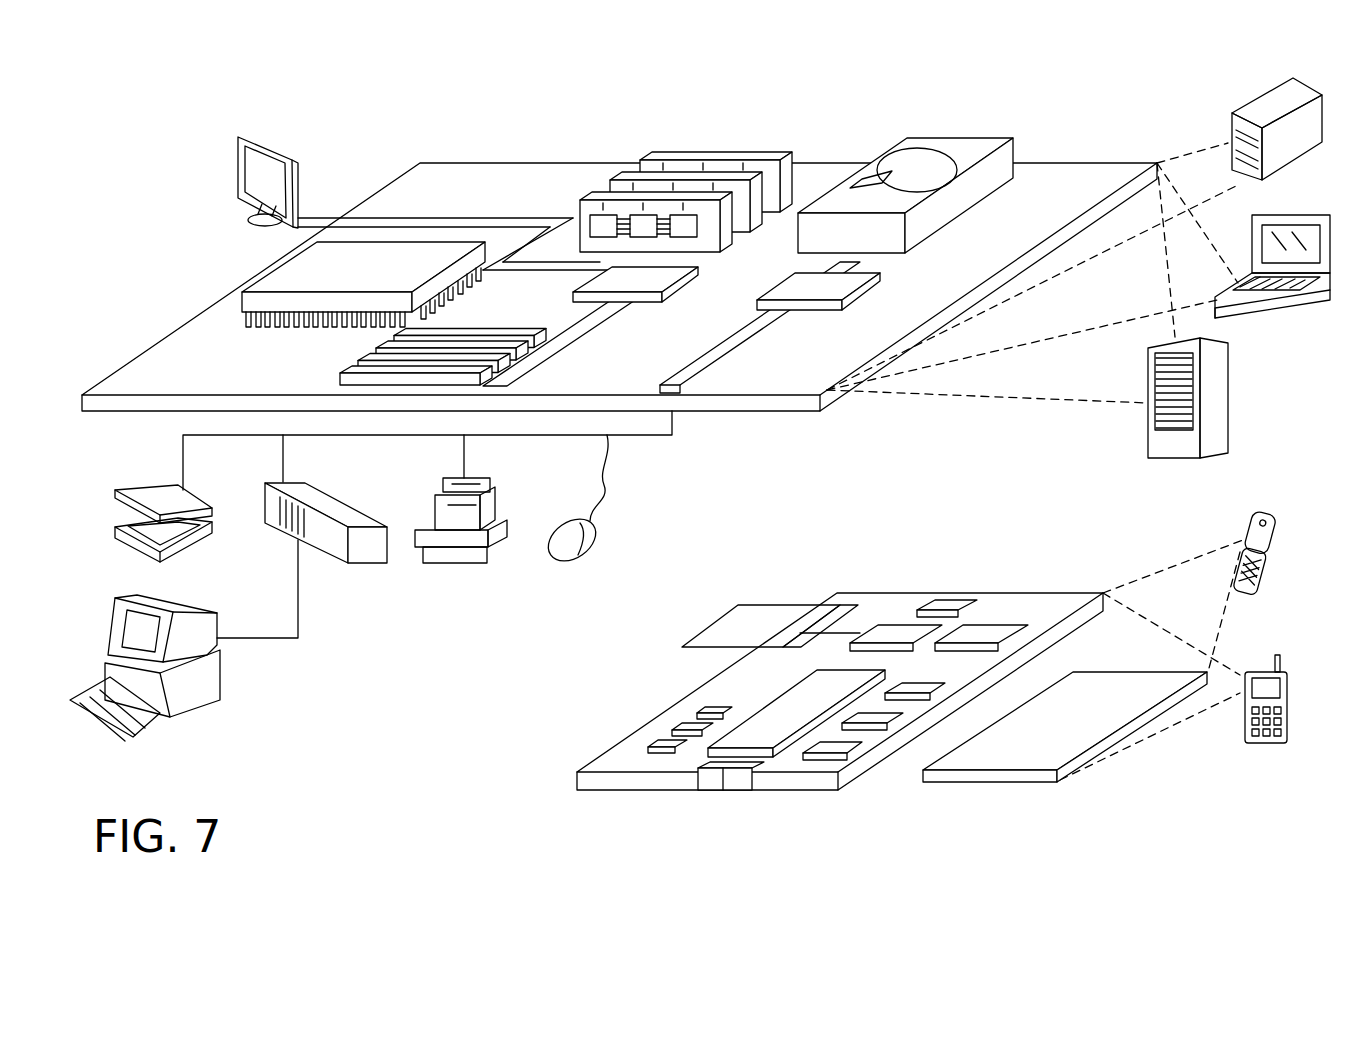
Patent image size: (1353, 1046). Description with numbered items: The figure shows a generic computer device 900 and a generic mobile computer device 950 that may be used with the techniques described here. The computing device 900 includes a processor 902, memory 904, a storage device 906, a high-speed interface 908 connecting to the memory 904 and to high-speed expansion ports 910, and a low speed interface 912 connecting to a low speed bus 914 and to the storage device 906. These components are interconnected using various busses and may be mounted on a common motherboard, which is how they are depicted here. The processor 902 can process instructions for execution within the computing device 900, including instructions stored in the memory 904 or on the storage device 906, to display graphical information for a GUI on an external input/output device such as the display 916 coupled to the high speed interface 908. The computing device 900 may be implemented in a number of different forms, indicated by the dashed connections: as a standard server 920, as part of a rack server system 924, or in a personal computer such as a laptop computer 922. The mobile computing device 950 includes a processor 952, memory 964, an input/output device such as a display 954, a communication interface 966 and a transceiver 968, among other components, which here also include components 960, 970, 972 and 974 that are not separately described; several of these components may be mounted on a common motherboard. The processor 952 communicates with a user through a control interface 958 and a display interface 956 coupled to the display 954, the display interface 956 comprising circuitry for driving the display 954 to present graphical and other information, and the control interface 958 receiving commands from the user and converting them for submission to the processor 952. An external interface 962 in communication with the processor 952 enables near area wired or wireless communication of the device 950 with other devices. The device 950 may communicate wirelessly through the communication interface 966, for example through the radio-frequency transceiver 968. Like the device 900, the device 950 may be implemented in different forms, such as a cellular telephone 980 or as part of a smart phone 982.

The generic computer device 900 is at (370, 108).
The processor 902 is at (262, 272).
The memory 904 is at (717, 157).
The storage device 906 is at (947, 138).
The high-speed interface 908 is at (648, 278).
The high-speed expansion ports 910 is at (366, 356).
The low speed interface 912 is at (790, 282).
The low speed bus 914 is at (680, 380).
The display 916 is at (244, 130).
The standard server 920 is at (1252, 108).
The laptop computer 922 is at (1305, 213).
The rack server system 924 is at (1230, 398).
The generic mobile computer device 950 is at (533, 797).
The processor 952 is at (762, 718).
The display 954 is at (1103, 685).
The display interface 956 is at (858, 748).
The control interface 958 is at (873, 717).
The component 960 is at (918, 690).
The external interface 962 is at (723, 790).
The memory 964 is at (680, 725).
The communication interface 966 is at (900, 627).
The transceiver 968 is at (990, 628).
The component 970 is at (947, 605).
The bus 972 is at (820, 607).
The component 974 is at (738, 605).
The cellular telephone 980 is at (1248, 512).
The smart phone 982 is at (1260, 672).